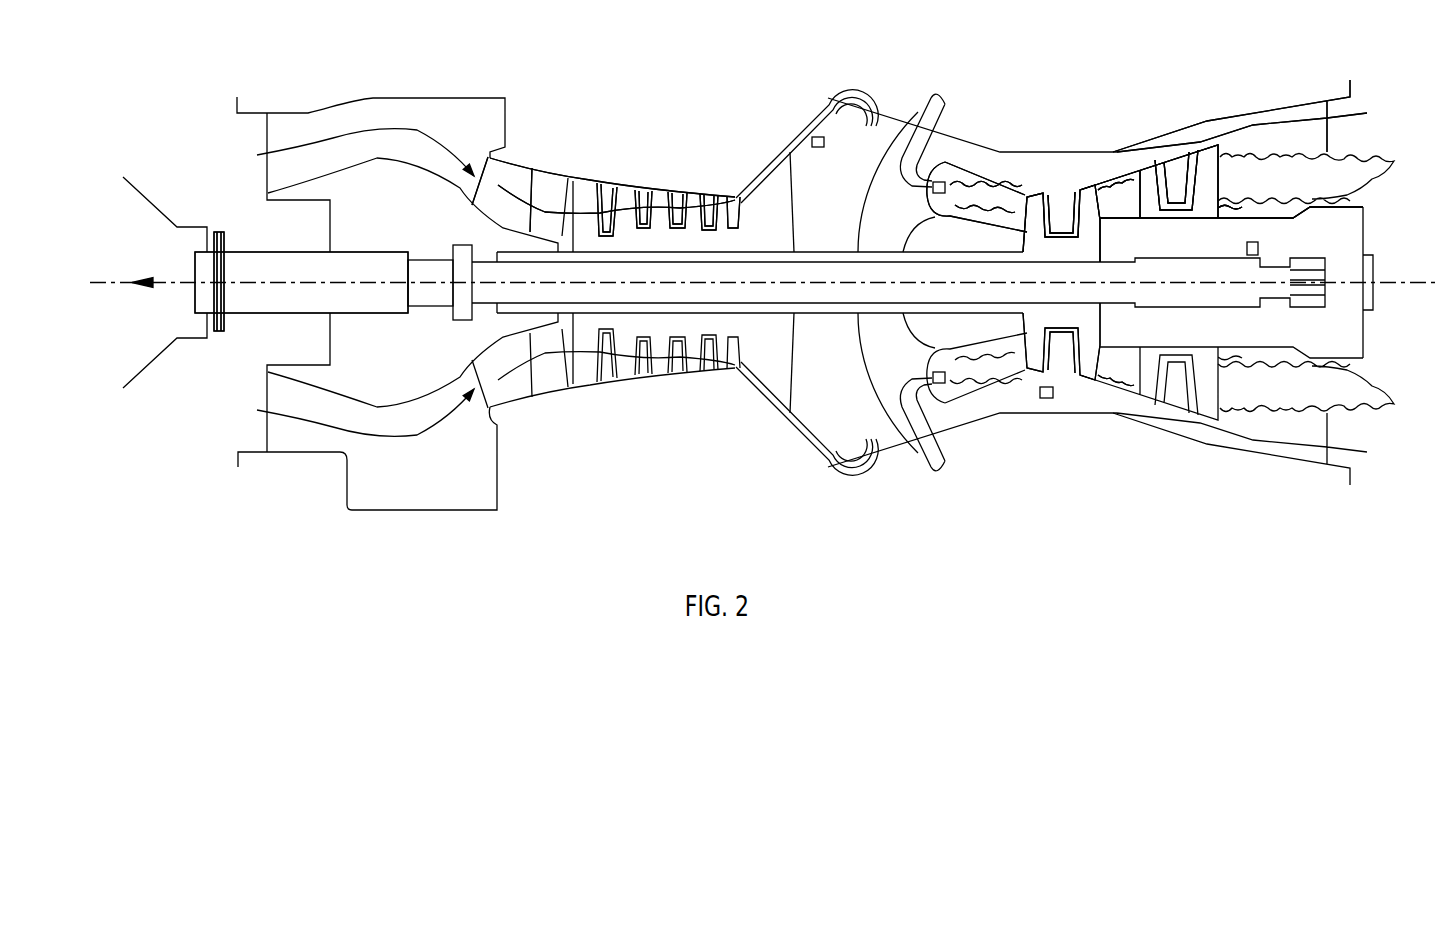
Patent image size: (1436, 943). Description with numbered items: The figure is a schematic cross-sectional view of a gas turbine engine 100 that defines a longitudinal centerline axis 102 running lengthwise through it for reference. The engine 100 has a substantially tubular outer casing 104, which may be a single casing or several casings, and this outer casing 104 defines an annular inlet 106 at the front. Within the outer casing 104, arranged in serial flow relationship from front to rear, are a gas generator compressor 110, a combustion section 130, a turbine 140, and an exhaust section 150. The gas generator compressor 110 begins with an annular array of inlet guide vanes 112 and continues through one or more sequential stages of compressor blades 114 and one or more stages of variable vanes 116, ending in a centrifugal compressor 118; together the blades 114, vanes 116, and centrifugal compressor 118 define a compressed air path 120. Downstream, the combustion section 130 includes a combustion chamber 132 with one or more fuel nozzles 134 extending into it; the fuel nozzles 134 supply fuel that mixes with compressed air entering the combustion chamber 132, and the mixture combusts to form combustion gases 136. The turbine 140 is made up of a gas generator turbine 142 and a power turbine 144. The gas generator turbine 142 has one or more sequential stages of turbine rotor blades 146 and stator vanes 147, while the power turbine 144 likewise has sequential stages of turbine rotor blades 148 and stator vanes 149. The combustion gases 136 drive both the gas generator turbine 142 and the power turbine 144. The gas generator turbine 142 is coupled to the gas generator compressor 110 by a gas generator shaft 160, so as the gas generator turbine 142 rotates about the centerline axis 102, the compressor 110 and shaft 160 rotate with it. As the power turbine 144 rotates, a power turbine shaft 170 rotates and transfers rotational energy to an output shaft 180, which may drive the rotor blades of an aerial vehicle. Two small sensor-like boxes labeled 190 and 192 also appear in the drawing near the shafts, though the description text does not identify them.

The gas turbine engine 100 is at (263, 508).
The centerline axis 102 is at (117, 280).
The outer casing 104 is at (597, 170).
The annular inlet 106 is at (273, 130).
The gas generator compressor 110 is at (607, 392).
The inlet guide vanes 112 is at (542, 348).
The compressor blades 114 is at (587, 197).
The variable vanes 116 is at (650, 367).
The centrifugal compressor 118 is at (763, 378).
The compressed air path 120 is at (532, 168).
The combustion section 130 is at (898, 410).
The combustion chamber 132 is at (963, 158).
The fuel nozzles 134 is at (925, 142).
The combustion gases 136 is at (970, 368).
The turbine 140 is at (1160, 518).
The gas generator turbine 142 is at (1103, 367).
The power turbine 144 is at (1227, 157).
The turbine rotor blades 146 is at (1027, 197).
The stator vanes 147 is at (1068, 200).
The turbine rotor blades 148 is at (1138, 165).
The stator vanes 149 is at (1183, 175).
The exhaust section 150 is at (1320, 470).
The gas generator shaft 160 is at (823, 243).
The power turbine shaft 170 is at (1227, 295).
The output shaft 180 is at (232, 257).
The sensor 190 is at (1260, 247).
The sensor 192 is at (822, 137).